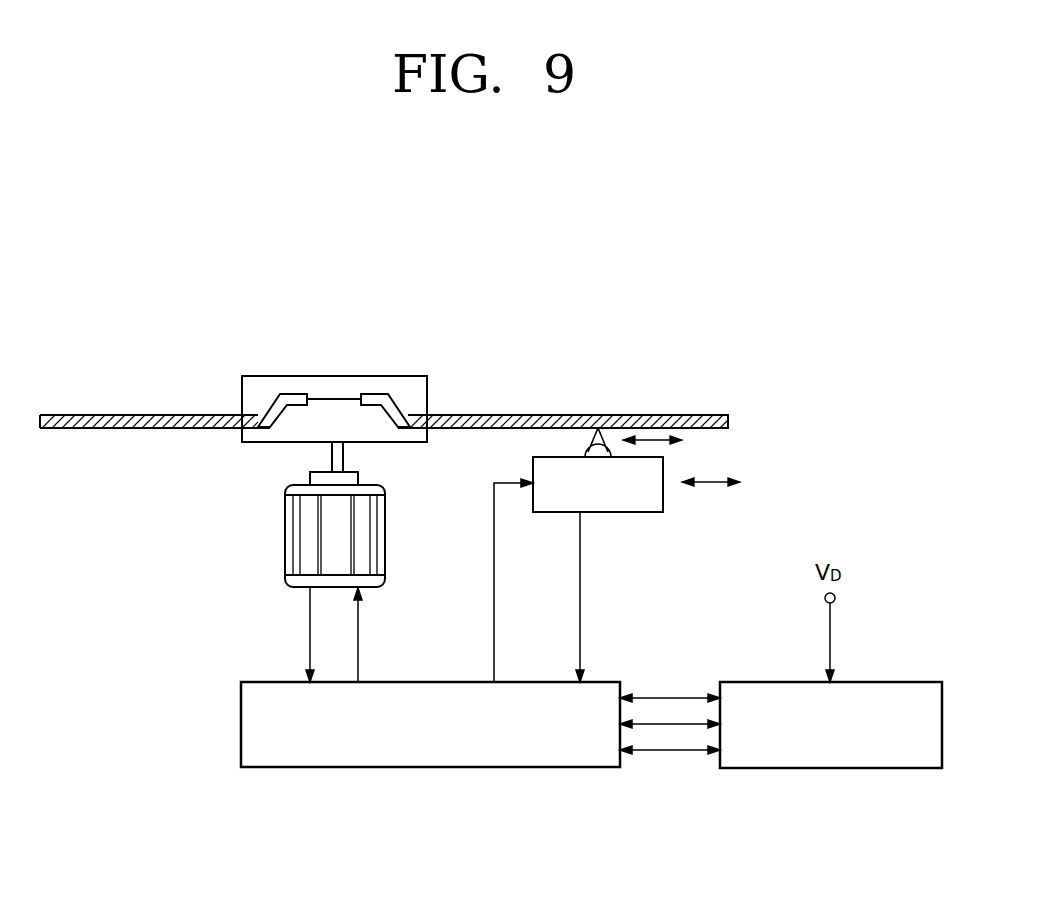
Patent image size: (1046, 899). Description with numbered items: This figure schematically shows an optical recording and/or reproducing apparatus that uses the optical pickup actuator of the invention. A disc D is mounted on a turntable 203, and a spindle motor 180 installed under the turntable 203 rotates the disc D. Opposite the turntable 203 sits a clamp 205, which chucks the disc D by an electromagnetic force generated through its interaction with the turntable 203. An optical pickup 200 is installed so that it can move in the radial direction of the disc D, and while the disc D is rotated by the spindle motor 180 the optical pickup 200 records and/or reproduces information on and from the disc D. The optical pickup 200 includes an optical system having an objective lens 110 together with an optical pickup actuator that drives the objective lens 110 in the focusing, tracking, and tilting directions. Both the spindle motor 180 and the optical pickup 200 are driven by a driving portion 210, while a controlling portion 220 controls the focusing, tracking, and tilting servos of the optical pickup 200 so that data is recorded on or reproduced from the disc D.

The disc D is at (679, 414).
The clamp 205 is at (268, 388).
The turntable 203 is at (262, 430).
The spindle motor 180 is at (292, 535).
The objective lens 110 is at (590, 448).
The optical pickup 200 is at (628, 503).
The driving portion 210 is at (430, 767).
The controlling portion 220 is at (837, 768).